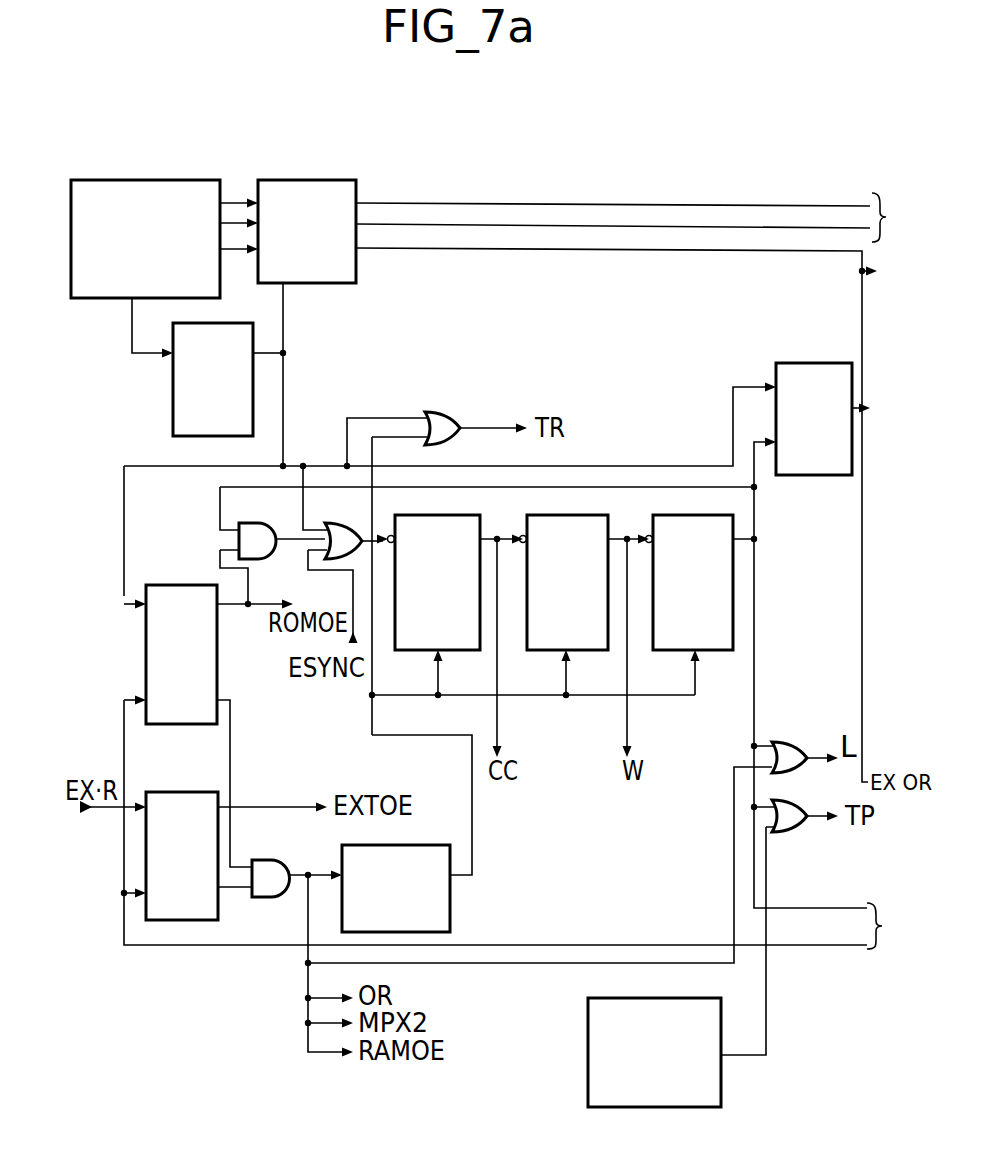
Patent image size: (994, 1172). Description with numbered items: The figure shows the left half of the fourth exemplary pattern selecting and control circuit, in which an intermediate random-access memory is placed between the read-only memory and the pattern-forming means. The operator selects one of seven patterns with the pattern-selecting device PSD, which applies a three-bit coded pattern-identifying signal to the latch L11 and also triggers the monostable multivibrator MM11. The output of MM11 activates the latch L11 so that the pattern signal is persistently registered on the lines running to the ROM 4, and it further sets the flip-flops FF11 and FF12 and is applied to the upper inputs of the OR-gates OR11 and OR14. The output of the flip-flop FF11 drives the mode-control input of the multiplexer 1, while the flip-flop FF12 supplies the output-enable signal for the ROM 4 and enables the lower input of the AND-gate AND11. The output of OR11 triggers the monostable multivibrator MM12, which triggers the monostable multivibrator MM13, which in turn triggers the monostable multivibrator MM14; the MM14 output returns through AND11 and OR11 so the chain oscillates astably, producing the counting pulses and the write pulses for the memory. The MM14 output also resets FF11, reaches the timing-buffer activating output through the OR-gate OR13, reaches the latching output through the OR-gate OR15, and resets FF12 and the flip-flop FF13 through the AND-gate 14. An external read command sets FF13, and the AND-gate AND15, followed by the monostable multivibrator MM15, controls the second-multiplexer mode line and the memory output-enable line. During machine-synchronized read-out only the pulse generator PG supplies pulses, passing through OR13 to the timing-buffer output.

The pattern-selecting device PSD is at (133, 180).
The latch L11 is at (297, 180).
The monostable multivibrator MM11 is at (207, 367).
The monostable multivibrator MM12 is at (456, 605).
The monostable multivibrator MM13 is at (585, 605).
The monostable multivibrator MM14 is at (700, 605).
The monostable multivibrator MM15 is at (396, 888).
The flip-flop FF11 is at (823, 419).
The flip-flop FF12 is at (219, 726).
The flip-flop FF13 is at (203, 856).
The AND-gate AND11 is at (272, 545).
The AND-gate AND15 is at (289, 864).
The OR-gate OR11 is at (345, 554).
The OR-gate OR13 is at (779, 927).
The OR-gate OR14 is at (437, 559).
The OR-gate OR15 is at (796, 742).
The pulse generator PG is at (588, 1036).
The ROM 4 is at (639, 217).
The multiplexer 1 is at (902, 356).
The AND-gate 14 is at (893, 921).